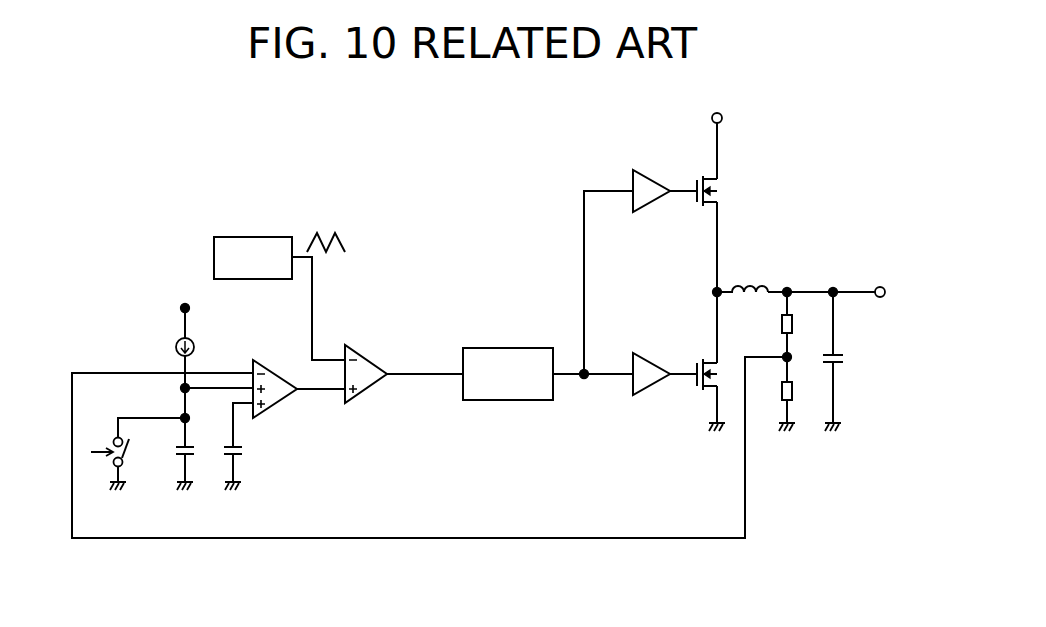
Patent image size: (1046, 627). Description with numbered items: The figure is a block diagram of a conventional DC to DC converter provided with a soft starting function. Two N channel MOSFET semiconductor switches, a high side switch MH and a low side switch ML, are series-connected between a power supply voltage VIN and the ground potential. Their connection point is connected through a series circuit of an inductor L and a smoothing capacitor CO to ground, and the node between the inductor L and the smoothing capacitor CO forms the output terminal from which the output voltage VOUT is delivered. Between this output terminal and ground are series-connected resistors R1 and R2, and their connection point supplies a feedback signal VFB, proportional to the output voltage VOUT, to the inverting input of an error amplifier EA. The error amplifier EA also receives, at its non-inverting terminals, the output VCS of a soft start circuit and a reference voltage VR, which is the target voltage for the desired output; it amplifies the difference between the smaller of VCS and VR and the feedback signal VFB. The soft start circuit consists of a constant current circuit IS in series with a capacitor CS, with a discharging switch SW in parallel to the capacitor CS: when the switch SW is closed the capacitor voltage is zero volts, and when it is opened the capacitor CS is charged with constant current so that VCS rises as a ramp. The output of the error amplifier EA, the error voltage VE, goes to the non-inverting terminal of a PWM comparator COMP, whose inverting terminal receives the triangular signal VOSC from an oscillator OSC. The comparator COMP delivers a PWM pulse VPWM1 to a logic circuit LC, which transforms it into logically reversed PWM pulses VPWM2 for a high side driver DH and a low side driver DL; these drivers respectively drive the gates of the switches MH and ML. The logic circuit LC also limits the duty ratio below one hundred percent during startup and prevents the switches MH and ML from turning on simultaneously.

The feedback signal VFB is at (429, 445).
The constant current circuit IS is at (173, 376).
The output voltage of the soft start circuit VCS is at (185, 411).
The discharging switch SW is at (106, 459).
The capacitor for soft starting CS is at (169, 466).
The reference voltage VR is at (250, 446).
The error amplifier EA is at (279, 370).
The error voltage VE is at (321, 401).
The oscillator OSC is at (251, 237).
The triangular signal VOSC is at (320, 286).
The PWM comparator COMP is at (372, 355).
The PWM pulse VPWM1 is at (425, 364).
The logic circuit LC is at (503, 348).
The PWM pulses VPWM2 is at (593, 296).
The low side driver DL is at (647, 352).
The high side driver DH is at (648, 168).
The low side semiconductor switch ML is at (702, 361).
The high side semiconductor switch MH is at (699, 234).
The power supply voltage VIN is at (714, 134).
The inductor L is at (741, 280).
The output voltage VOUT is at (826, 282).
The resistor R1 is at (800, 327).
The resistor R2 is at (800, 394).
The smoothing capacitor CO is at (849, 361).